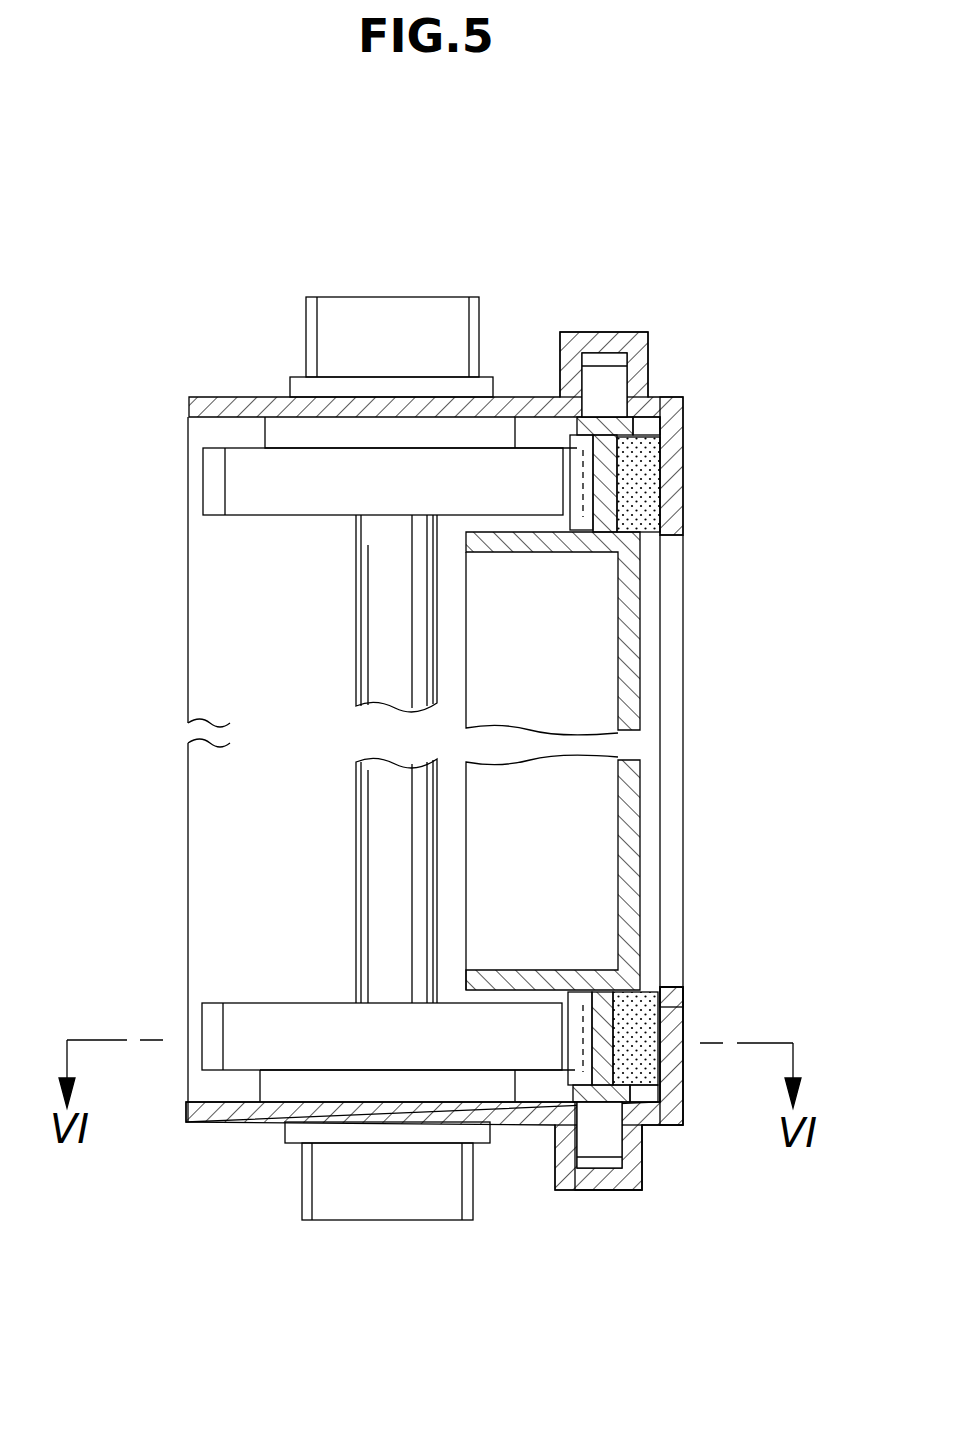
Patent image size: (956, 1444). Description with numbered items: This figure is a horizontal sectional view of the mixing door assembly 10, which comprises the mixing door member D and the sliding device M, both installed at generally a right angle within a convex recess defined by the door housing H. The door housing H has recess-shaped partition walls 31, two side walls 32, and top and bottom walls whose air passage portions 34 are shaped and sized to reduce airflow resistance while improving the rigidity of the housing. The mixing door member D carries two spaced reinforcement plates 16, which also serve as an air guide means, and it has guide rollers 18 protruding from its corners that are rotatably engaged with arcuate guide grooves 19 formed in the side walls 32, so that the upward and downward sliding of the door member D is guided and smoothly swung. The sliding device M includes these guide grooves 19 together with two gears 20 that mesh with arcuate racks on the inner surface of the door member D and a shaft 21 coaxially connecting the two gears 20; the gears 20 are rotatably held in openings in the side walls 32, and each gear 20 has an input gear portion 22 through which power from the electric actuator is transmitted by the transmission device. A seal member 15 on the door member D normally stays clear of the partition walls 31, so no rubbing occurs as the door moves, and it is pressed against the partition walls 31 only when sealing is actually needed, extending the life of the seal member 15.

The mixing door assembly 10 is at (514, 308).
The door housing H is at (206, 430).
The sliding device M is at (227, 552).
The mixing door member D is at (650, 575).
The seal member 15 is at (640, 487).
The reinforcement plates 16 is at (553, 540).
The guide rollers 18 is at (622, 360).
The guide grooves 19 is at (600, 385).
The gears 20 is at (310, 500).
The shaft 21 is at (360, 807).
The input gear portion 22 is at (305, 318).
The partition walls 31 is at (683, 428).
The side walls 32 is at (218, 396).
The air passage portions 34 is at (660, 983).